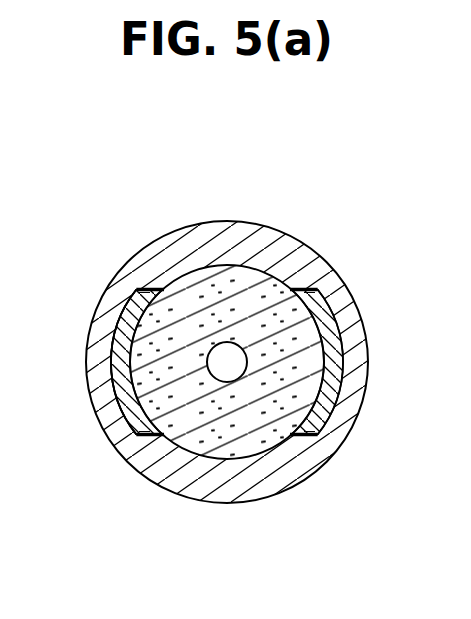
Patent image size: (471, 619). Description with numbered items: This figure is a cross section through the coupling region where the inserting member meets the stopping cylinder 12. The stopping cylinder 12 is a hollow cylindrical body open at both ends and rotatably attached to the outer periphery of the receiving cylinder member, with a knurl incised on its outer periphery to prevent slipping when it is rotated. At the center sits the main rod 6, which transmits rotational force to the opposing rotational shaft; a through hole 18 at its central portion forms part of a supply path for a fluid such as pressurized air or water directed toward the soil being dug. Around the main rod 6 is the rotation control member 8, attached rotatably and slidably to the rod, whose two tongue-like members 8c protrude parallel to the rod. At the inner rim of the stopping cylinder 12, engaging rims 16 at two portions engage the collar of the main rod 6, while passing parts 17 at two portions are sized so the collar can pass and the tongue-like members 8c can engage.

The main rod 6 is at (197, 298).
The rotation control member 8 is at (122, 298).
The tongue-like members 8c is at (130, 438).
The stopping cylinder 12 is at (285, 247).
The engaging rims 16 is at (232, 265).
The passing parts 17 is at (112, 388).
The through hole 18 is at (225, 372).